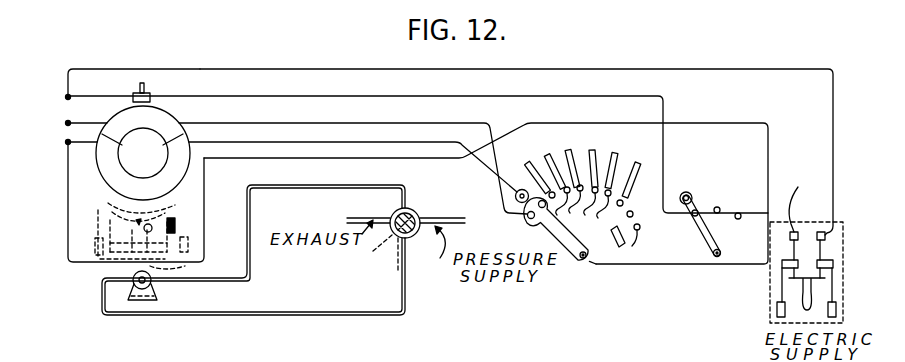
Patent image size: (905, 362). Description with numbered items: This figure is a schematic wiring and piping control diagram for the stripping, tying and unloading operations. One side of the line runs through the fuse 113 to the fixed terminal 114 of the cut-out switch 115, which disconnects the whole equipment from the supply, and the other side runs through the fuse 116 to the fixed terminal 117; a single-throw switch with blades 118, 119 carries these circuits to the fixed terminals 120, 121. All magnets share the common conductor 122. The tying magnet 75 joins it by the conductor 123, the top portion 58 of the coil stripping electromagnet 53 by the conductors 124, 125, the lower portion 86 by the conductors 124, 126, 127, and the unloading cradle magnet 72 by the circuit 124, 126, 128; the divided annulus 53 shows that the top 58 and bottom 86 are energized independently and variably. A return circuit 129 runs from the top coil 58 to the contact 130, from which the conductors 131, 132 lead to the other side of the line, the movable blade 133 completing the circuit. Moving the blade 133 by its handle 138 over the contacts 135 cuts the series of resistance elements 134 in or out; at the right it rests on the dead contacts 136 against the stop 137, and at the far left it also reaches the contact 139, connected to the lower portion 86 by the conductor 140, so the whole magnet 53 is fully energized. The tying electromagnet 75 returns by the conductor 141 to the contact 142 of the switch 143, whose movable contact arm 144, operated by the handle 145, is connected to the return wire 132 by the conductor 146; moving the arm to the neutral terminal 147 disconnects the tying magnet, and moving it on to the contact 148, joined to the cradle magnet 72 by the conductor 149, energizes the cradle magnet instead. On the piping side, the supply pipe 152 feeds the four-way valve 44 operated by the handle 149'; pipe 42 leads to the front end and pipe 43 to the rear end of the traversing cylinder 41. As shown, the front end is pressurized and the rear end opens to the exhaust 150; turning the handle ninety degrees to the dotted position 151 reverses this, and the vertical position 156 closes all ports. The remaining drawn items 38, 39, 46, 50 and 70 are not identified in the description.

The dashed housing base line 38 is at (100, 259).
The dashed housing 39 is at (100, 220).
The traversing cylinder 41 is at (133, 274).
The pipe 42 is at (102, 293).
The pipe 43 is at (298, 188).
The four-way valve 44 is at (416, 212).
The dashed housing lower part 46 is at (180, 268).
The dashed members 50 is at (93, 242).
The coil stripping electromagnet 53 is at (95, 162).
The upper third of the coil stripping electromagnet 58 is at (152, 122).
The switch element 70 is at (174, 218).
The unloading cradle magnet 72 is at (176, 224).
The tying magnet 75 is at (175, 57).
The lower portion of the coil stripping electromagnet 86 is at (112, 173).
The fuse 113 is at (838, 309).
The fixed terminal 114 is at (826, 263).
The cut-out switch 115 is at (812, 296).
The fuse 116 is at (777, 311).
The fixed terminal 117 is at (784, 265).
The switch blade 118 is at (826, 234).
The switch blade 119 is at (788, 237).
The fixed terminal 120 is at (829, 228).
The fixed terminal 121 is at (790, 202).
The common conductor 122 is at (788, 69).
The conductor 123 is at (77, 96).
The conductor 124 is at (66, 96).
The conductor 125 is at (88, 122).
The conductor 126 is at (66, 122).
The conductor 127 is at (66, 142).
The conductor 128 is at (67, 207).
The return circuit 129 is at (235, 123).
The contact 130 is at (543, 225).
The conductor 131 is at (665, 264).
The return wire 132 is at (720, 265).
The movable blade 133 is at (569, 251).
The resistance elements 134 is at (613, 152).
The contacts 135 is at (584, 208).
The dead contacts 136 is at (637, 231).
The stop 137 is at (617, 248).
The handle 138 is at (516, 193).
The contact 139 is at (527, 216).
The conductor 140 is at (288, 142).
The conductor 141 is at (558, 96).
The contact 142 is at (700, 209).
The switch 143 is at (697, 194).
The movable contact arm 144 is at (696, 230).
The handle 145 is at (680, 198).
The conductor 146 is at (755, 238).
The neutral terminal 147 is at (720, 208).
The contact 148 is at (756, 194).
The conductor 149 is at (508, 193).
The handle 149' is at (432, 272).
The exhaust 150 is at (367, 203).
The dotted position 151 is at (373, 251).
The supply pipe 152 is at (468, 222).
The vertical position 156 is at (397, 268).